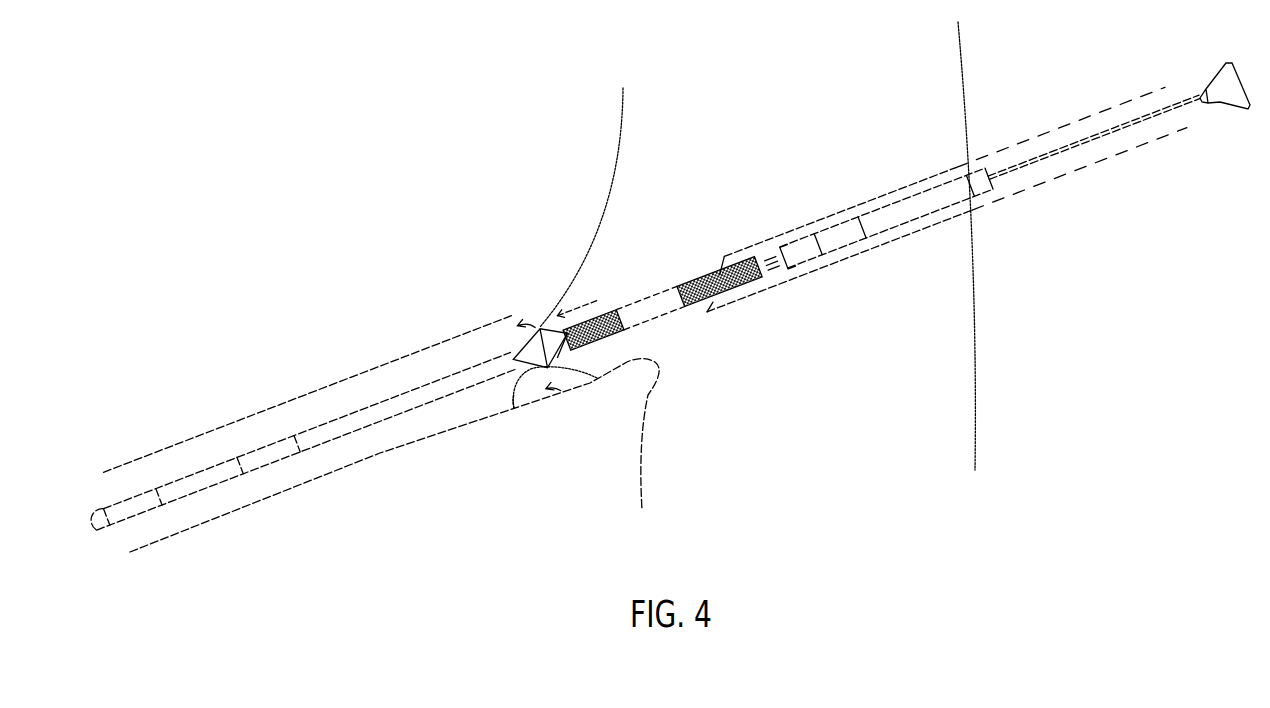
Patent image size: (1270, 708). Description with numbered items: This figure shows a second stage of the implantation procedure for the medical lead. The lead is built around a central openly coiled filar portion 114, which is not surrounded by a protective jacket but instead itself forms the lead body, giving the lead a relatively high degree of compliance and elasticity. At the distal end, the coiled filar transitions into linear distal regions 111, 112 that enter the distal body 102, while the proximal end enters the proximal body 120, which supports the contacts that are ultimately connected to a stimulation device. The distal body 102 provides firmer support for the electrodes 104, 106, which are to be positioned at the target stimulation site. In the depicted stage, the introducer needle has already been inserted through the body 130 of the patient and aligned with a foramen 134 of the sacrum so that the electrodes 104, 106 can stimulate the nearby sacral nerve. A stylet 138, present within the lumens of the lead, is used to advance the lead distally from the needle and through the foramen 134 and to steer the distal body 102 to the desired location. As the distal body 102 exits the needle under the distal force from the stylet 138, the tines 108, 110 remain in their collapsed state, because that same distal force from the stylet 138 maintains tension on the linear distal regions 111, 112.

The distal body 102 is at (210, 490).
The electrode 104 is at (130, 498).
The electrode 106 is at (276, 462).
The tine 108 is at (520, 340).
The tine 110 is at (514, 408).
The linear distal region 111 is at (557, 320).
The linear distal region 112 is at (566, 358).
The openly coiled filar portion 114 is at (607, 317).
The proximal body 120 is at (805, 250).
The body of the patient 130 is at (960, 97).
The foramen 134 is at (437, 360).
The stylet 138 is at (1060, 150).